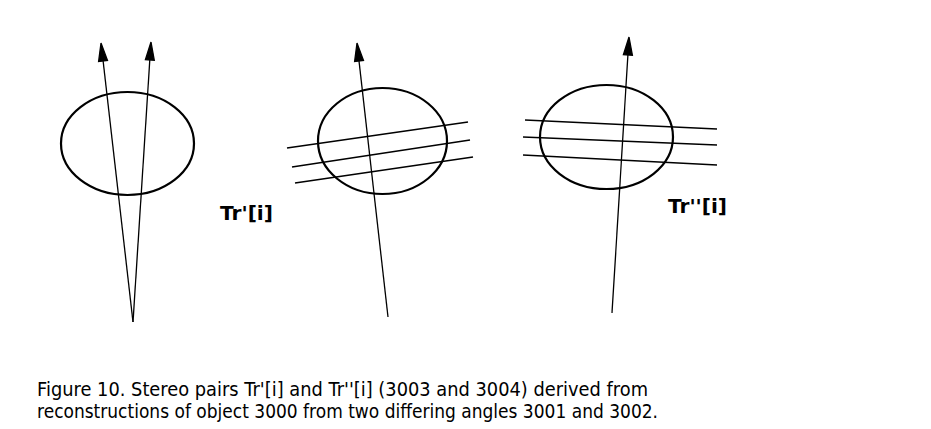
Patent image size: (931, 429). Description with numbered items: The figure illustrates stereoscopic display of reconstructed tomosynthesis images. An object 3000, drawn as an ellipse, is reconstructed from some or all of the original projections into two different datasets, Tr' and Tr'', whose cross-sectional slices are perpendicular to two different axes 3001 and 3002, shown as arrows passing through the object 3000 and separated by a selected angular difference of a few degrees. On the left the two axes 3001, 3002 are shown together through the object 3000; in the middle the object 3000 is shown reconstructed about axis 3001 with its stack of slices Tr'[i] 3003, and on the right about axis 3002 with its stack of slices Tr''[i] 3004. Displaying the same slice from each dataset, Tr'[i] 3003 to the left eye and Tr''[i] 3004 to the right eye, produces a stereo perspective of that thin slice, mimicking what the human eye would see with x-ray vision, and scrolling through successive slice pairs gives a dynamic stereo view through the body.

The object 3000 is at (187, 160).
The first reconstruction axis 3001 is at (85, 56).
The second reconstruction axis 3002 is at (173, 43).
The slice pair Tr'[i] 3003 is at (311, 191).
The slice pair Tr''[i] 3004 is at (692, 177).